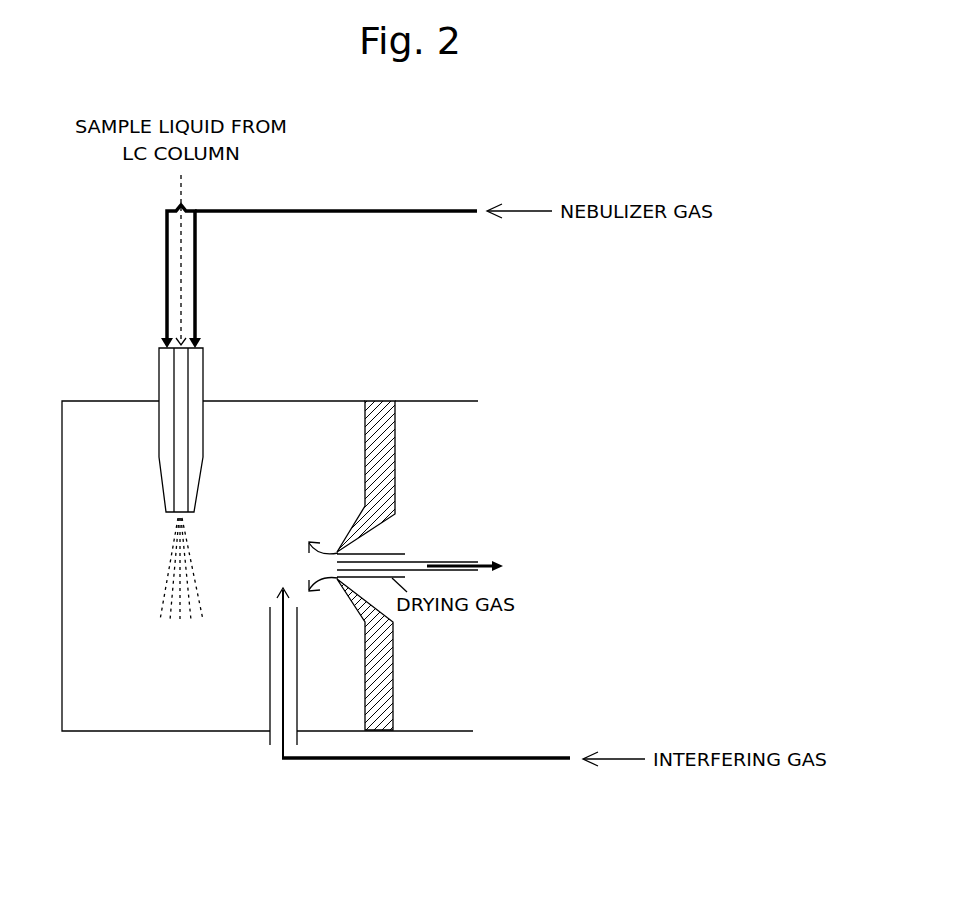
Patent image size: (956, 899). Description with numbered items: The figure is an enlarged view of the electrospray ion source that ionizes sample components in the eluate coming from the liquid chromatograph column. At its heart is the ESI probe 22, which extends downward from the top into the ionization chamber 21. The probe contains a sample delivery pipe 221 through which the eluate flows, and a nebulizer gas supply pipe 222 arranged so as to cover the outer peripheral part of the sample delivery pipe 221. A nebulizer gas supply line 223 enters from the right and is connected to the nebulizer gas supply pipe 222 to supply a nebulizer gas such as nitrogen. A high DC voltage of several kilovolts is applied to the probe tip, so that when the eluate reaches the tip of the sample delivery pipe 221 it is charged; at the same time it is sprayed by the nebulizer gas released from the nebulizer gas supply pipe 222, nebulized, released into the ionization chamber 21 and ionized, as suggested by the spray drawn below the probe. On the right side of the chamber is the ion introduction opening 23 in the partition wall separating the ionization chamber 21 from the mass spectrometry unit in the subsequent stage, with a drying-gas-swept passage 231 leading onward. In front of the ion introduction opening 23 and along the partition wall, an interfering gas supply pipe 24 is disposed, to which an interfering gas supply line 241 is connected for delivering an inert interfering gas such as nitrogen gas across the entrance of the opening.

The ionization chamber 21 is at (90, 733).
The ESI probe 22 is at (318, 397).
The sample delivery pipe 221 is at (181, 468).
The nebulizer gas supply pipe 222 is at (196, 435).
The nebulizer gas supply line 223 is at (398, 210).
The ion introduction opening 23 is at (333, 547).
The desolvation tube 231 is at (420, 560).
The interfering gas supply pipe 24 is at (268, 676).
The interfering gas supply line 241 is at (490, 757).